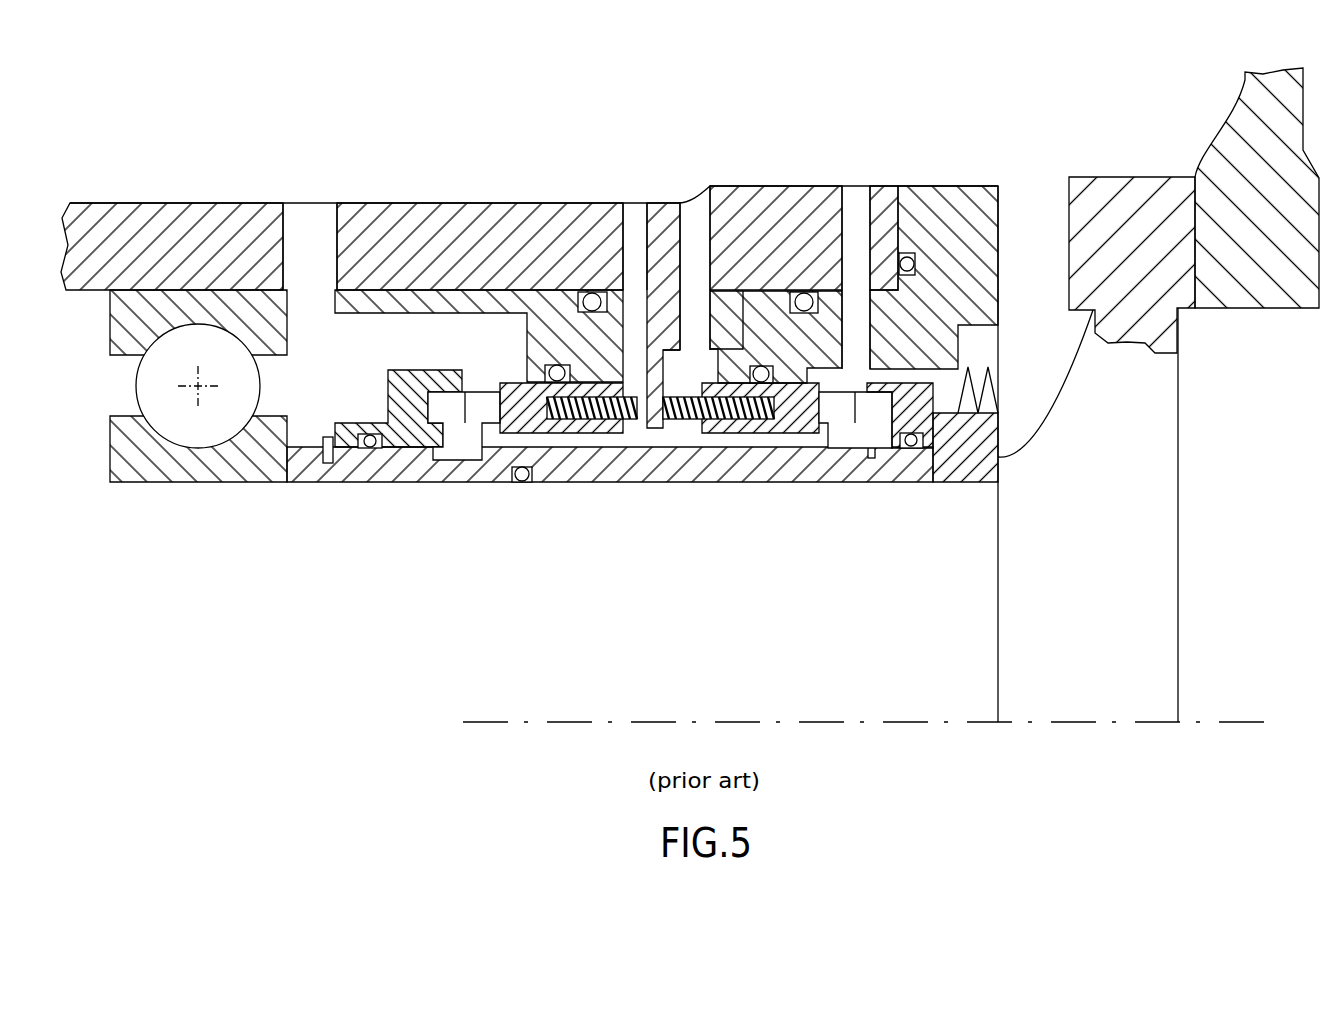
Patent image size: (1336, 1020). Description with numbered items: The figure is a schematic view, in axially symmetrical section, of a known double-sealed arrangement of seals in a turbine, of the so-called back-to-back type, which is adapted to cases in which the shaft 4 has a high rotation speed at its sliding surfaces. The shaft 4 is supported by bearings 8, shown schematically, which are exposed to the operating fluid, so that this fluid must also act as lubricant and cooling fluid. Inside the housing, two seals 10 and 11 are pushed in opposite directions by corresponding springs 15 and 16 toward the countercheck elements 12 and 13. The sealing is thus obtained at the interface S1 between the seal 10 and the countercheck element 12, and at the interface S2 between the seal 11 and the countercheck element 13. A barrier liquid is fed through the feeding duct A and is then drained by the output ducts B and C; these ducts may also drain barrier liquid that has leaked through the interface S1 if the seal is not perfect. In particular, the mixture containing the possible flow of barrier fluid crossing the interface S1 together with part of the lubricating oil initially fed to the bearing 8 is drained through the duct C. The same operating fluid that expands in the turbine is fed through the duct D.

The bearings 8 is at (227, 483).
The countercheck element 12 is at (393, 440).
The interface S1 is at (467, 410).
The seal 10 is at (563, 427).
The spring 15 is at (643, 437).
The spring 16 is at (663, 420).
The seal 11 is at (748, 427).
The interface S2 is at (845, 404).
The countercheck element 13 is at (912, 415).
The shaft 4 is at (882, 688).
The output duct C is at (312, 235).
The output duct B is at (637, 218).
The feeding duct A is at (694, 218).
The duct D is at (854, 242).